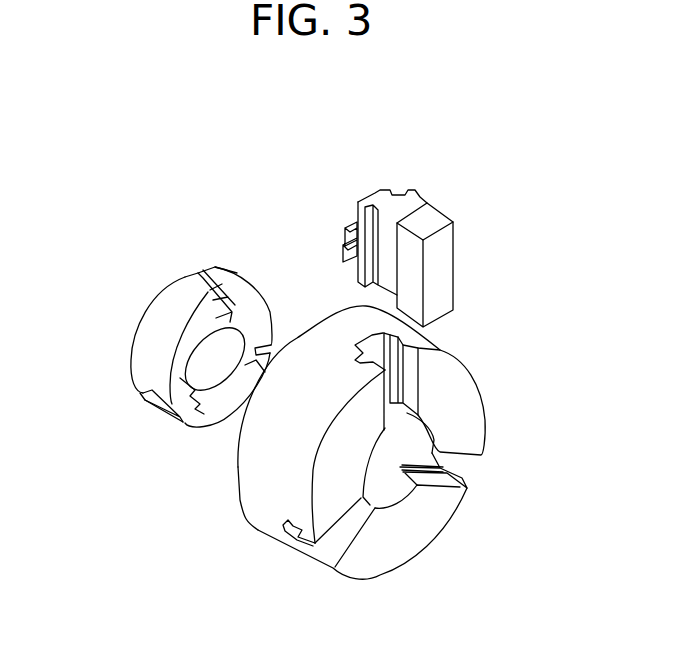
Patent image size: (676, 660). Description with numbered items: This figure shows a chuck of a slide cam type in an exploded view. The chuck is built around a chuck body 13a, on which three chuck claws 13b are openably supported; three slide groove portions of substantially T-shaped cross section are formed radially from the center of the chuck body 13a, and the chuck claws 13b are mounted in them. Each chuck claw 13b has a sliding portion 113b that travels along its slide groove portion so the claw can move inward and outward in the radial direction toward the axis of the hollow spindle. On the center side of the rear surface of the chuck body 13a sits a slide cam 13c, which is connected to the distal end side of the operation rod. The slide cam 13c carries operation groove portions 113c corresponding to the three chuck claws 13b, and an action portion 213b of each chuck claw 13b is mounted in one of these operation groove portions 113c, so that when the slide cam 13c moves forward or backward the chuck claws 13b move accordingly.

The chuck body 13a is at (260, 470).
The chuck claw 13b is at (401, 258).
The slide cam 13c is at (158, 319).
The sliding portion 113b is at (382, 200).
The operation groove portion 113c is at (197, 278).
The action portion 213b is at (350, 227).